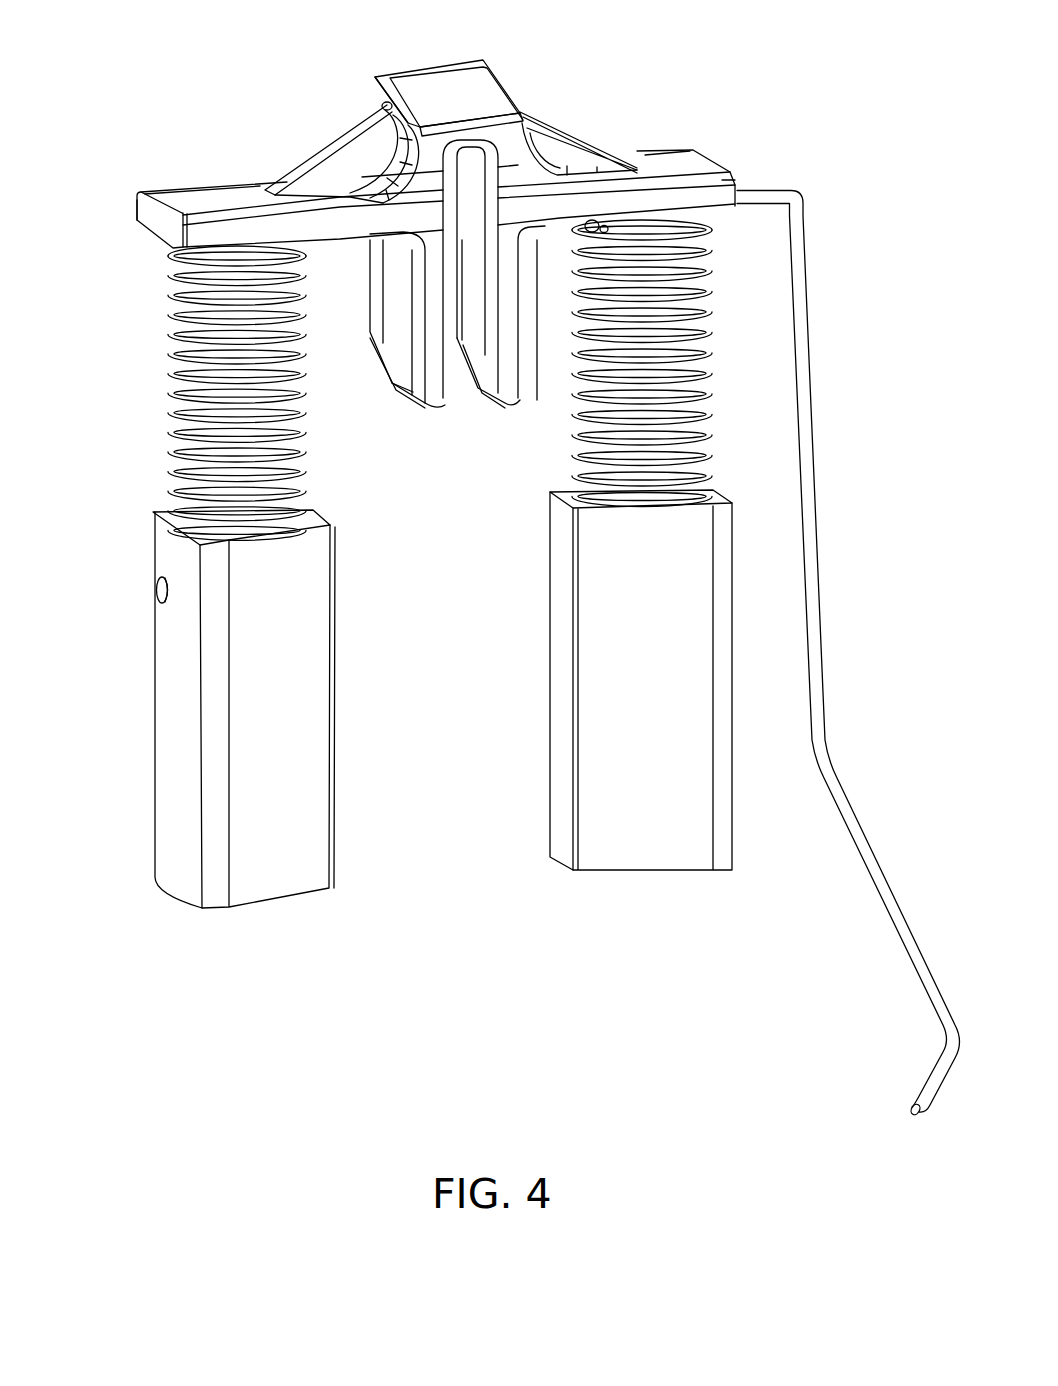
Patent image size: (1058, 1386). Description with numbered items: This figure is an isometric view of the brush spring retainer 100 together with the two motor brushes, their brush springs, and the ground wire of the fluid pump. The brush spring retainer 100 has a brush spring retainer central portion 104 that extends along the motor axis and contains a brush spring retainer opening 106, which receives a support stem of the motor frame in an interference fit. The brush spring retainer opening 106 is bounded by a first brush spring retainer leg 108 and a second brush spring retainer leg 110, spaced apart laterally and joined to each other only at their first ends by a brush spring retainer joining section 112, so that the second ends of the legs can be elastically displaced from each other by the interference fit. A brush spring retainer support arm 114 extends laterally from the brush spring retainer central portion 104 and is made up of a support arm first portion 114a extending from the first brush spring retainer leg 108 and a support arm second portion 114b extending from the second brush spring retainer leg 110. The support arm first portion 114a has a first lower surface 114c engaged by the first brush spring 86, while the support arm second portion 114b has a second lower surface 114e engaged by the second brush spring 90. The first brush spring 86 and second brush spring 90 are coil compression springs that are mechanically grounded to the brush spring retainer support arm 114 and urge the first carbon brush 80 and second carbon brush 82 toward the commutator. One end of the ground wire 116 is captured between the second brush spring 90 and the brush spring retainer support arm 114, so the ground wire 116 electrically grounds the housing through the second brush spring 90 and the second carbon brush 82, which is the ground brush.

The brush spring retainer 100 is at (513, 95).
The brush spring retainer central portion 104 is at (439, 268).
The brush spring retainer joining section 112 is at (379, 105).
The first brush spring retainer leg 108 is at (398, 383).
The second brush spring retainer leg 110 is at (492, 311).
The brush spring retainer opening 106 is at (470, 292).
The brush spring retainer support arm 114 is at (475, 186).
The support arm first portion 114a is at (191, 195).
The support arm second portion 114b is at (677, 162).
The first lower surface 114c is at (158, 248).
The second lower surface 114e is at (718, 218).
The first brush spring 86 is at (170, 387).
The second brush spring 90 is at (578, 470).
The first carbon brush 80 is at (282, 900).
The second carbon brush 82 is at (648, 870).
The ground wire 116 is at (873, 876).